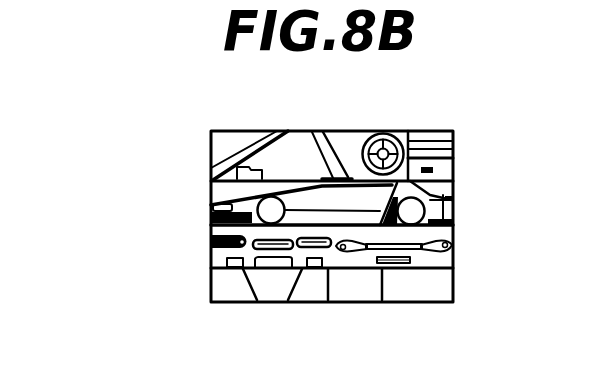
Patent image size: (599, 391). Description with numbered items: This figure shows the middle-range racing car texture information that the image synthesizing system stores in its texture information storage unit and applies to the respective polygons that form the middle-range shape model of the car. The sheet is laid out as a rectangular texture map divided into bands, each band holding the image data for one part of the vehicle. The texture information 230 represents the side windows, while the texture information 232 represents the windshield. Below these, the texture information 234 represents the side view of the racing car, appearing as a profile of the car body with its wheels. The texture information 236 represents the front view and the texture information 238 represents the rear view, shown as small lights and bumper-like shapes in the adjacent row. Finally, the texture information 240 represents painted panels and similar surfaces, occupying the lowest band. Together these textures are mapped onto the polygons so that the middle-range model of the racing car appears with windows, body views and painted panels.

The side window texture information 230 is at (297, 146).
The windshield texture information 232 is at (453, 147).
The side view texture information 234 is at (453, 196).
The front view texture information 236 is at (213, 253).
The rear view texture information 238 is at (453, 243).
The painted panel texture information 240 is at (387, 303).